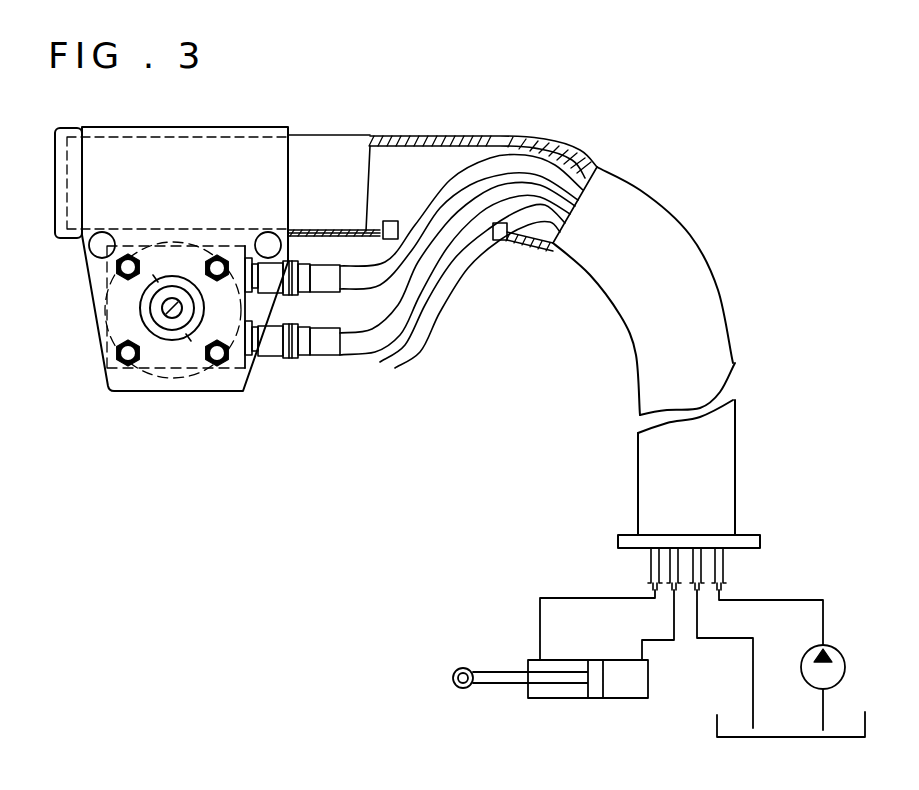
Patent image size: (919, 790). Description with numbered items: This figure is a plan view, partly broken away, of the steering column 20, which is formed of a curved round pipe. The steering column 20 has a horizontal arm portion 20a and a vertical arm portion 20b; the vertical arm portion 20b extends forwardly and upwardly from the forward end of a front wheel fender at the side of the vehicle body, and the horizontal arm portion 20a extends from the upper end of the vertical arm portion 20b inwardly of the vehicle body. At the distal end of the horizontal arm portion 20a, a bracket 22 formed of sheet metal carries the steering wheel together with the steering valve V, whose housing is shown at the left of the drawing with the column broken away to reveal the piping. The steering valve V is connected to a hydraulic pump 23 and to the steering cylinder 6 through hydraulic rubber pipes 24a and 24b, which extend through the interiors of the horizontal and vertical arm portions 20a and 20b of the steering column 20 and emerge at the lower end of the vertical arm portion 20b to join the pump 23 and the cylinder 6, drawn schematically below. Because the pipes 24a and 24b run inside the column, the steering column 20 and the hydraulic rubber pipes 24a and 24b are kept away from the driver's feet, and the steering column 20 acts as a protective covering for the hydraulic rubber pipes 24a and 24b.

The steering cylinder 6 is at (530, 660).
The steering column 20 is at (702, 263).
The horizontal arm portion 20a is at (447, 133).
The vertical arm portion 20b is at (742, 423).
The bracket 22 is at (122, 383).
The hydraulic pump 23 is at (843, 653).
The hydraulic rubber pipe 24a is at (427, 312).
The hydraulic rubber pipe 24b is at (355, 277).
The steering valve V is at (200, 380).